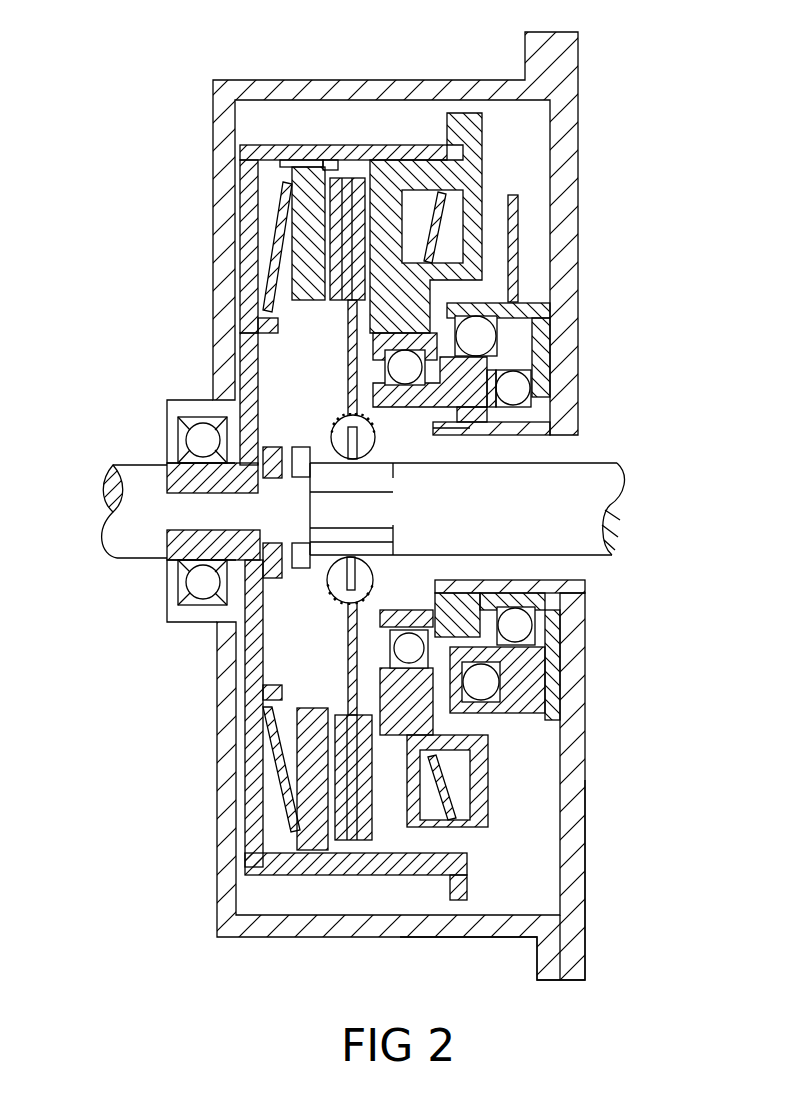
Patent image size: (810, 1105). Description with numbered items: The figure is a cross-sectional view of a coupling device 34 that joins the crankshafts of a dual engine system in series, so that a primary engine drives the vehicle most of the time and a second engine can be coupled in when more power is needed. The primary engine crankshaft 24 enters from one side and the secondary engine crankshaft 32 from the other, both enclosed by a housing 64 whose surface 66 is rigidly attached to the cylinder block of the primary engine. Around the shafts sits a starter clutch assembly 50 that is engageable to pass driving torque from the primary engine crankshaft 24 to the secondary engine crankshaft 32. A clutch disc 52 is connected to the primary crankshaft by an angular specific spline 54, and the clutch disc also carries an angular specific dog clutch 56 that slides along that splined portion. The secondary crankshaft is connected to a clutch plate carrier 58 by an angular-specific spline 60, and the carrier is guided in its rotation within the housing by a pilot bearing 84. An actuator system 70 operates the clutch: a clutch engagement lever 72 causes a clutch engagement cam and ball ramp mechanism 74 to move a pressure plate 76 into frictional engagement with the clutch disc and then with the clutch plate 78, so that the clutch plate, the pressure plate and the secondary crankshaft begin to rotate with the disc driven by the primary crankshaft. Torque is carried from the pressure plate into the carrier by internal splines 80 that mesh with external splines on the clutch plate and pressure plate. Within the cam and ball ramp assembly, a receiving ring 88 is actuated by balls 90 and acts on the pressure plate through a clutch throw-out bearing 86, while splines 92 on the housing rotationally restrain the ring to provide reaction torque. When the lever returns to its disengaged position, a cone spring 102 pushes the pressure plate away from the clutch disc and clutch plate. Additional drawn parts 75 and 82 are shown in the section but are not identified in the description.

The primary engine crankshaft 24 is at (578, 489).
The secondary engine crankshaft 32 is at (147, 495).
The coupling device 34 is at (214, 970).
The starter clutch assembly 50 is at (392, 125).
The clutch disc 52 is at (345, 238).
The angular specific spline 54 is at (345, 480).
The angular specific dog clutch 56 is at (297, 567).
The clutch plate carrier 58 is at (245, 190).
The angular-specific spline 60 is at (180, 463).
The housing 64 is at (574, 698).
The surface 66 is at (592, 855).
The actuator system 70 is at (542, 280).
The clutch engagement lever 72 is at (517, 207).
The clutch engagement cam and ball ramp mechanism 74 is at (533, 327).
The bearing 75 is at (518, 625).
The pressure plate 76 is at (388, 213).
The clutch plate 78 is at (313, 782).
The internal splines 80 is at (380, 865).
The spring 82 is at (310, 782).
The pilot bearing 84 is at (197, 587).
The clutch throw-out bearing 86 is at (403, 360).
The receiving ring 88 is at (463, 650).
The balls 90 is at (483, 340).
The splines 92 is at (485, 437).
The cone spring 102 is at (430, 778).